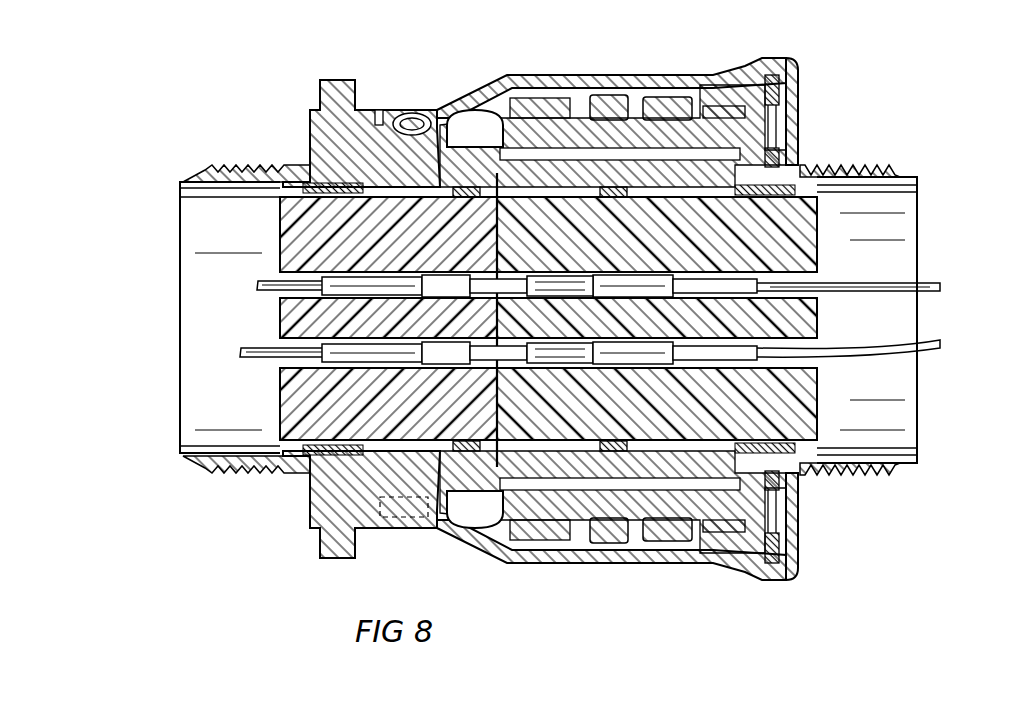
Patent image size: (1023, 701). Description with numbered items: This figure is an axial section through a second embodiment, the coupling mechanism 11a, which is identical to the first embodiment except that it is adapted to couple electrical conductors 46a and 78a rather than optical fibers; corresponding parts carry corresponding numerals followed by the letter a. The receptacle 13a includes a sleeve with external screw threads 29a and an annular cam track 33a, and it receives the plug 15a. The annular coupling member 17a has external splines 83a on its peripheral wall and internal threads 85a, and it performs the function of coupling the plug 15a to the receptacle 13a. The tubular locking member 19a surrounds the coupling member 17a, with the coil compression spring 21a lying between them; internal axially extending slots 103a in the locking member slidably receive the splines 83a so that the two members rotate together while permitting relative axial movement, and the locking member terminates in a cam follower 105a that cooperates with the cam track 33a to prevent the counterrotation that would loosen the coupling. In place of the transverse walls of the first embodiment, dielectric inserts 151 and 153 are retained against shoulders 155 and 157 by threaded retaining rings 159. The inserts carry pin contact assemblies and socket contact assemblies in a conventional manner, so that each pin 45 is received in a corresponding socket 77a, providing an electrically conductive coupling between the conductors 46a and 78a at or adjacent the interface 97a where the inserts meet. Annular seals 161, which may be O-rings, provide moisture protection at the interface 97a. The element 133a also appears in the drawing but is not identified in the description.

The coupling mechanism 11a is at (885, 60).
The receptacle 13a is at (322, 84).
The plug 15a is at (893, 178).
The coupling member 17a is at (752, 100).
The locking member 19a is at (785, 62).
The coil compression spring 21a is at (680, 100).
The external screw threads 29a is at (522, 475).
The annular cam track 33a is at (380, 110).
The pin 45 is at (552, 284).
The electrical conductor 46a is at (265, 291).
The socket 77a is at (590, 290).
The electrical conductor 78a is at (942, 287).
The external splines 83a is at (556, 118).
The internal threads 85a is at (560, 475).
The interface 97a is at (497, 238).
The slots 103a is at (500, 118).
The cam follower 105a is at (414, 124).
The bolt 133a is at (800, 80).
The dielectric insert 151 is at (281, 401).
The dielectric insert 153 is at (803, 420).
The shoulder 155 is at (400, 454).
The shoulder 157 is at (810, 403).
The threaded retaining rings 159 is at (310, 455).
The annular seals 161 is at (490, 455).